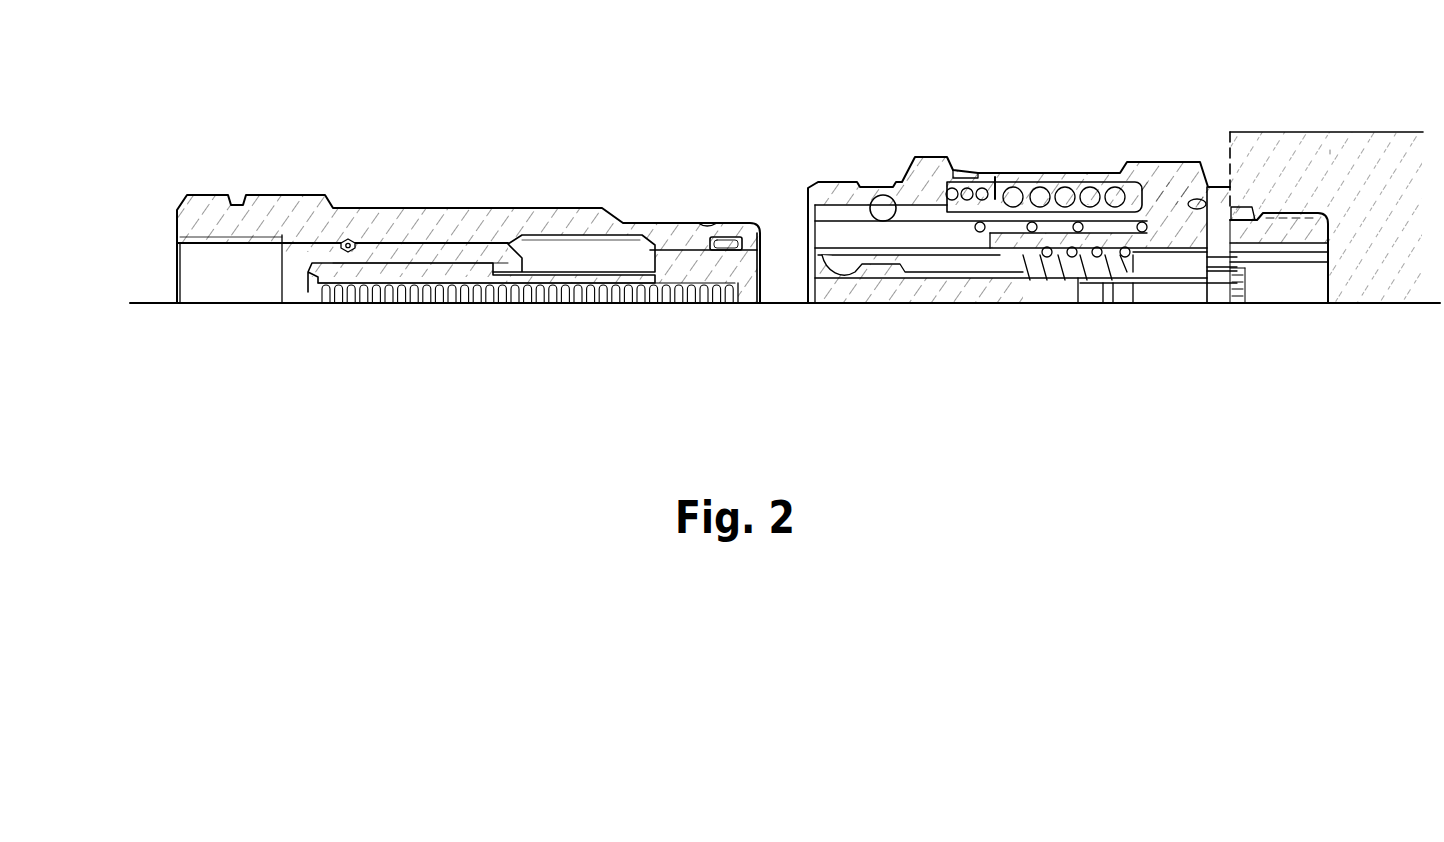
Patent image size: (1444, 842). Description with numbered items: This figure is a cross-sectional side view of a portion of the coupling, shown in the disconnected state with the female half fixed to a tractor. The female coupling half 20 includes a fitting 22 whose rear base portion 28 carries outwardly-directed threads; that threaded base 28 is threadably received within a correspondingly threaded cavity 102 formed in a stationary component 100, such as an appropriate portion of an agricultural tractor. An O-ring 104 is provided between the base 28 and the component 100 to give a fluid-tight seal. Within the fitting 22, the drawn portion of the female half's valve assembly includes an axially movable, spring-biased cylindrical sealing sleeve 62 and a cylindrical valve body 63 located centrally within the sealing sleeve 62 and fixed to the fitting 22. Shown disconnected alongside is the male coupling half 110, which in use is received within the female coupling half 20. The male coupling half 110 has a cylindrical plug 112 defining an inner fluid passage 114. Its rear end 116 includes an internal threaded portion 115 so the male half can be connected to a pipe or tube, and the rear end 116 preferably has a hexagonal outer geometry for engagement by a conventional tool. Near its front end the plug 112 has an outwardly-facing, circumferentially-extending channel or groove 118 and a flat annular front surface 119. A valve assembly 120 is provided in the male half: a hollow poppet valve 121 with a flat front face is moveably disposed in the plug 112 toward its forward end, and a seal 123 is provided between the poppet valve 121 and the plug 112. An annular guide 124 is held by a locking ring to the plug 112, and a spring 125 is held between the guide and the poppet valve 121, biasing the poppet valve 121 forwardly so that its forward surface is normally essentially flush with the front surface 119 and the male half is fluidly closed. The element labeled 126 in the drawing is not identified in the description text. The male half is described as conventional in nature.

The female coupling half 20 is at (1005, 143).
The fitting 22 is at (1163, 160).
The rear base portion 28 is at (1277, 247).
The sealing sleeve 62 is at (925, 250).
The valve body 63 is at (847, 285).
The stationary component 100 is at (1325, 145).
The threaded cavity 102 is at (1320, 172).
The O-ring 104 is at (1262, 170).
The male coupling half 110 is at (426, 186).
The plug 112 is at (490, 215).
The inner fluid passage 114 is at (575, 248).
The internal threaded portion 115 is at (257, 265).
The rear end 116 is at (172, 198).
The channel or groove 118 is at (707, 222).
The front surface 119 is at (763, 232).
The valve assembly 120 is at (560, 324).
The poppet valve 121 is at (693, 264).
The seal 123 is at (733, 232).
The annular guide 124 is at (411, 249).
The spring 125 is at (341, 246).
The piston rod 126 is at (481, 280).